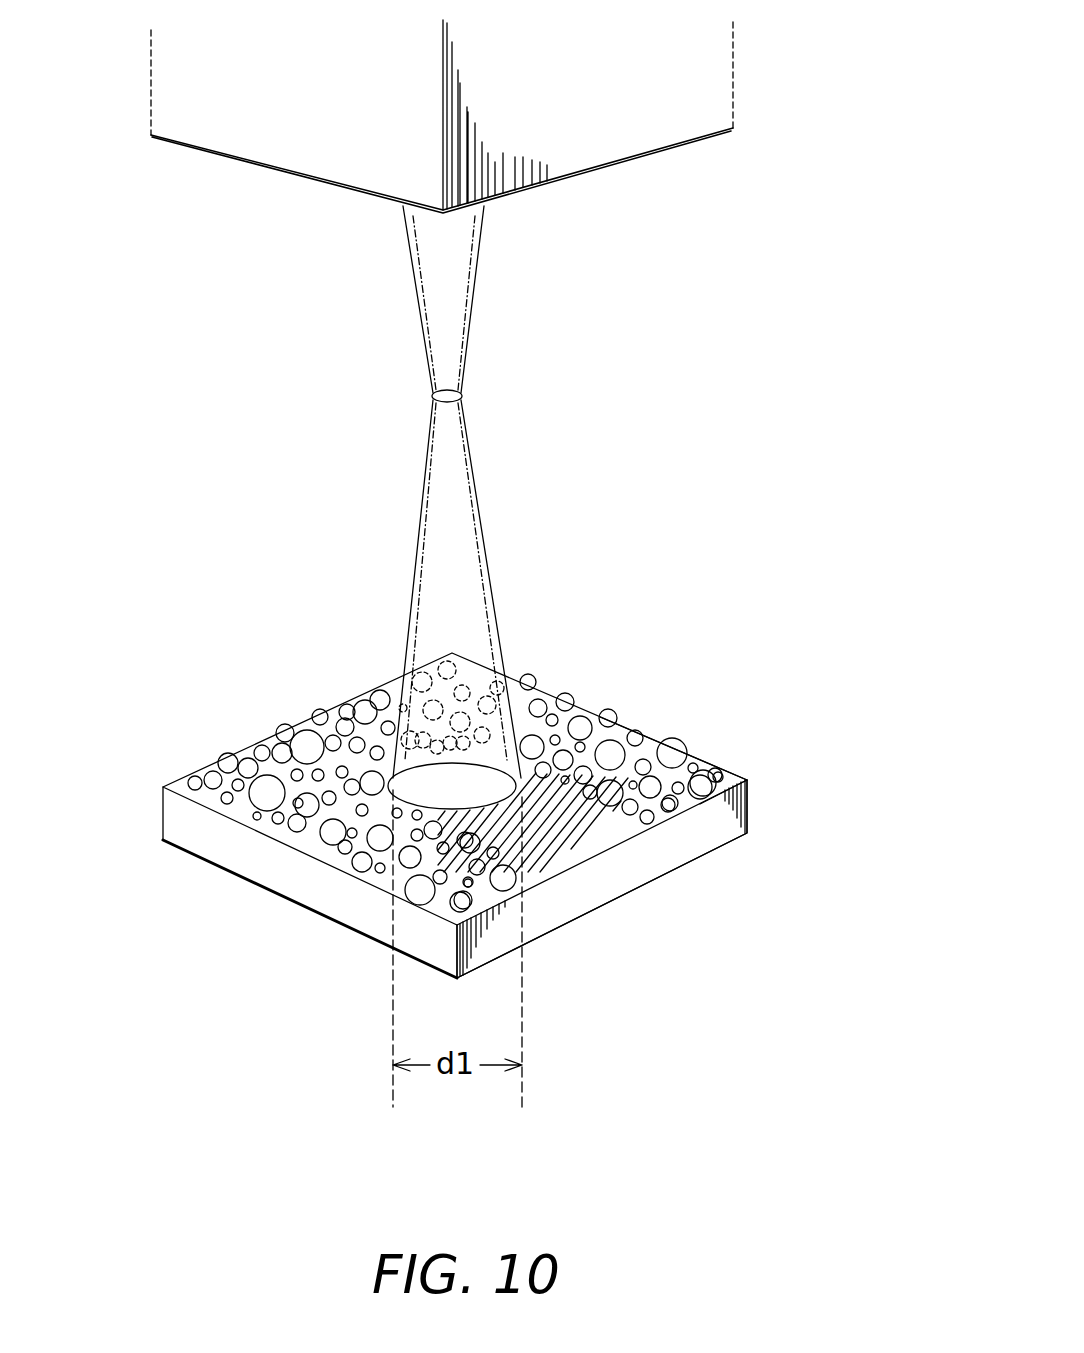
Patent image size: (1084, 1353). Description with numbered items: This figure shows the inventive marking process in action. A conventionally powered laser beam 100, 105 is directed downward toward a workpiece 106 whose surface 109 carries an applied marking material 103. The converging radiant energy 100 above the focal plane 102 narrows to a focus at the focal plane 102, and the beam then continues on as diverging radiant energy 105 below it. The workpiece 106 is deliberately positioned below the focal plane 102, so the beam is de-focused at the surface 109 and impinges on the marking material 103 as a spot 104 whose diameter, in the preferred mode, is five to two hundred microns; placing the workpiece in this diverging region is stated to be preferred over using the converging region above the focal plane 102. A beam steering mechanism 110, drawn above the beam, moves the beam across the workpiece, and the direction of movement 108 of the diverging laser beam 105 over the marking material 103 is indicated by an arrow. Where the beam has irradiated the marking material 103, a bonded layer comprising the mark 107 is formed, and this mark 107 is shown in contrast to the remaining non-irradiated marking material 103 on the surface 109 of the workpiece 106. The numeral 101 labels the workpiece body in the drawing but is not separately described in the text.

The laser beam 100 is at (450, 303).
The substrate 101 is at (270, 858).
The focal plane 102 is at (509, 397).
The marking material 103 is at (673, 745).
The spot 104 is at (383, 803).
The diverging radiant energy 105 is at (453, 530).
The workpiece 106 is at (750, 808).
The mark 107 is at (590, 830).
The direction of movement 108 is at (566, 840).
The surface 109 is at (747, 780).
The beam steering mechanism 110 is at (697, 116).